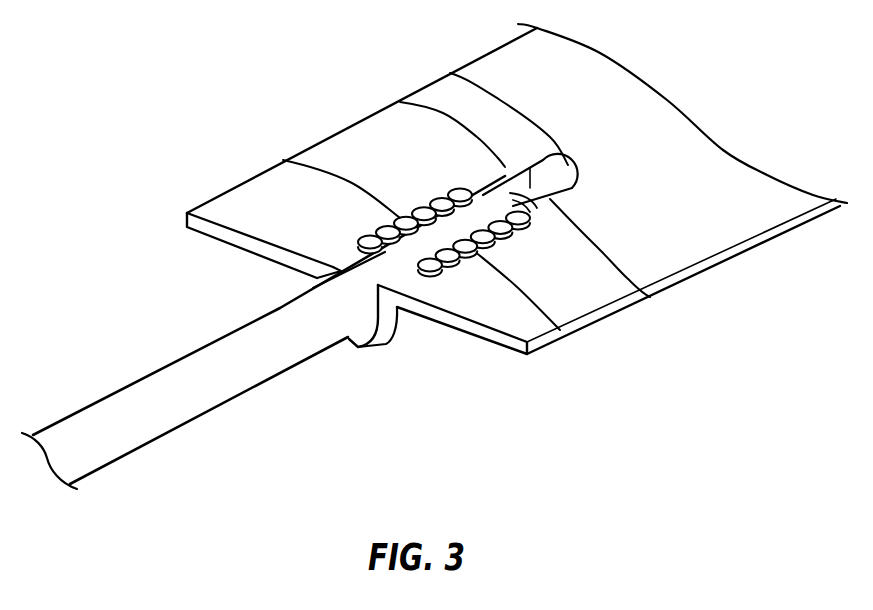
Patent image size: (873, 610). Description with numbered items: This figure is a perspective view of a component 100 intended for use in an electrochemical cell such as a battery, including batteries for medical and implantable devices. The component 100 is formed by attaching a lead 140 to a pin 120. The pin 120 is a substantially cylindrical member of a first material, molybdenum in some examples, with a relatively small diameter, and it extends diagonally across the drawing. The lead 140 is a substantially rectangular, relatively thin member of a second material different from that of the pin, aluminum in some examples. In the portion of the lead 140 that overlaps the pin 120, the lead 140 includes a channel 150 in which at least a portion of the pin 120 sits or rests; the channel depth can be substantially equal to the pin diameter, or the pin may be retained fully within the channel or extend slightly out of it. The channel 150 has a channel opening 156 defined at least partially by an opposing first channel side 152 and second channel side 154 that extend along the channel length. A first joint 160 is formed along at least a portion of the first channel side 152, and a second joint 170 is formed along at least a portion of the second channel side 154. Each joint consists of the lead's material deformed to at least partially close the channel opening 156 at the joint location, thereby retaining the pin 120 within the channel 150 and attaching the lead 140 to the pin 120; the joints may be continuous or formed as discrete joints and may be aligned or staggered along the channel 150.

The component 100 is at (267, 87).
The pin 120 is at (157, 370).
The lead 140 is at (322, 152).
The channel 150 is at (317, 279).
The first channel side 152 is at (650, 297).
The second channel side 154 is at (400, 102).
The channel opening 156 is at (450, 73).
The first joint 160 is at (585, 330).
The second joint 170 is at (283, 160).